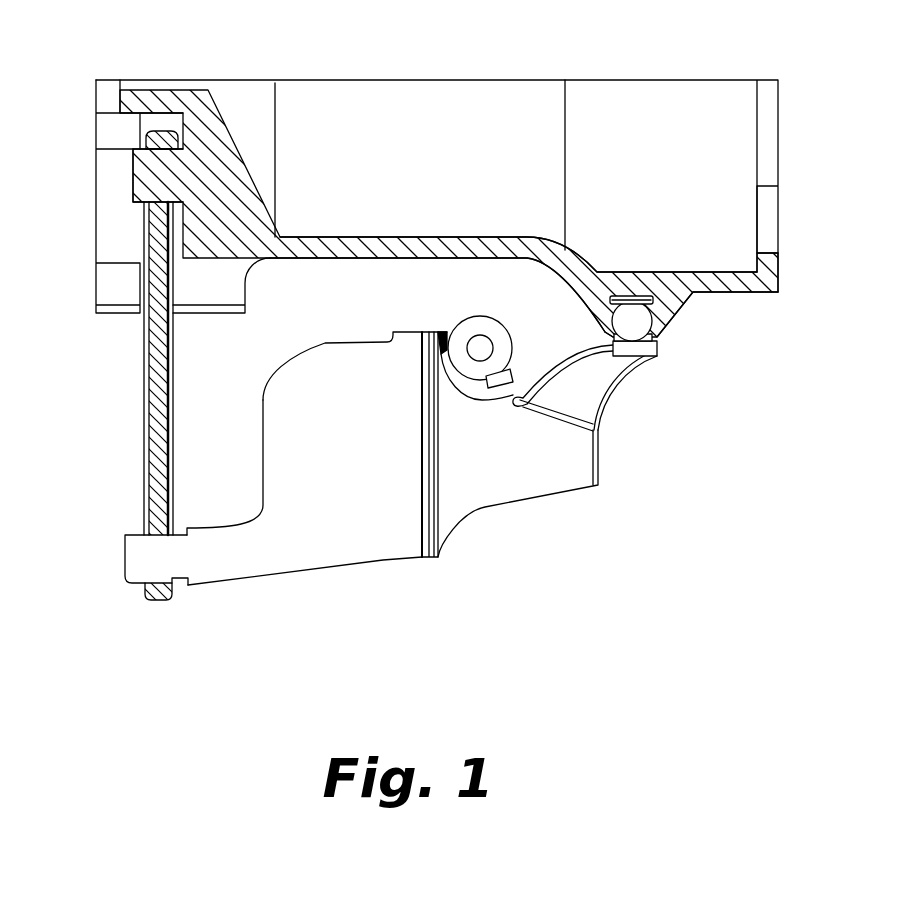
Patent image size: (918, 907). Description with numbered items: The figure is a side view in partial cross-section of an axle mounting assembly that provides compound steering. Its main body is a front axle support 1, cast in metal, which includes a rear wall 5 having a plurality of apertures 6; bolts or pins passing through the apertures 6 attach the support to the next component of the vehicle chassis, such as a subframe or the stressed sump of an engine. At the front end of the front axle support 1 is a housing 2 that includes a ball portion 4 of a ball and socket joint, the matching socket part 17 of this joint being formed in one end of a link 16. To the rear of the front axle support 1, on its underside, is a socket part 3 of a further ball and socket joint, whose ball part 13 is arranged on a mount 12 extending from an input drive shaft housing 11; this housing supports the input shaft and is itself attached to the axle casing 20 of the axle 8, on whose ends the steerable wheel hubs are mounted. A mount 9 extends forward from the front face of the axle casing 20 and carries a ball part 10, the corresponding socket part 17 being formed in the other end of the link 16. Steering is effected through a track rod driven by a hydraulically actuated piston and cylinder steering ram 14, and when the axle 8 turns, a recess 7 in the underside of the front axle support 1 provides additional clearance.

The front axle support 1 is at (770, 320).
The housing 2 is at (223, 110).
The socket part 3 is at (662, 325).
The ball portion 4 is at (133, 193).
The rear wall 5 is at (754, 106).
The apertures 6 is at (770, 212).
The recess 7 is at (483, 262).
The axle 8 is at (400, 575).
The mount 9 is at (235, 563).
The ball part 10 is at (150, 567).
The input drive shaft housing 11 is at (535, 482).
The mount 12 is at (593, 388).
The ball part 13 is at (627, 322).
The steering ram 14 is at (500, 325).
The link 16 is at (152, 410).
The socket part 17 is at (160, 149).
The axle casing 20 is at (290, 372).